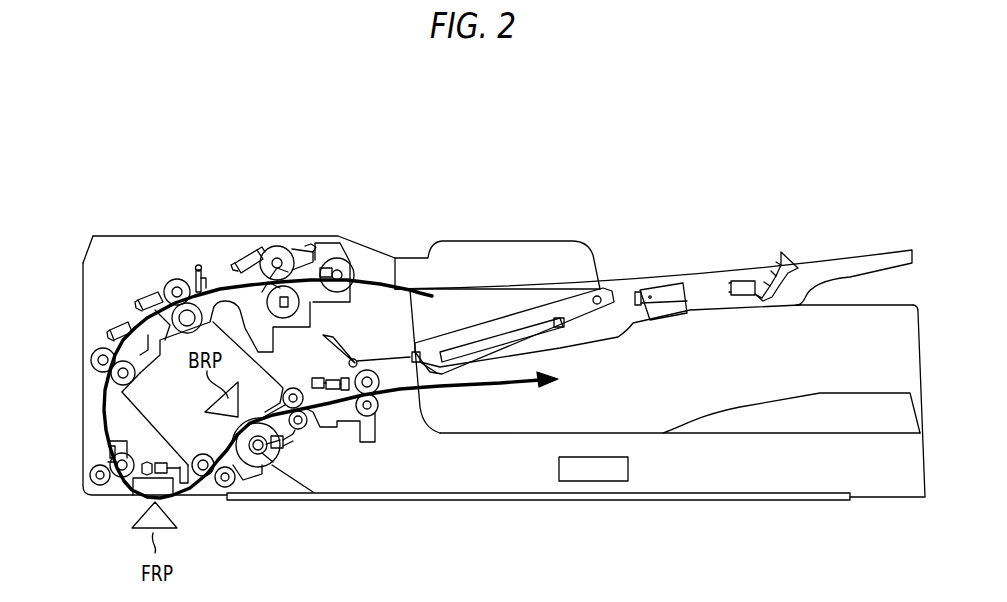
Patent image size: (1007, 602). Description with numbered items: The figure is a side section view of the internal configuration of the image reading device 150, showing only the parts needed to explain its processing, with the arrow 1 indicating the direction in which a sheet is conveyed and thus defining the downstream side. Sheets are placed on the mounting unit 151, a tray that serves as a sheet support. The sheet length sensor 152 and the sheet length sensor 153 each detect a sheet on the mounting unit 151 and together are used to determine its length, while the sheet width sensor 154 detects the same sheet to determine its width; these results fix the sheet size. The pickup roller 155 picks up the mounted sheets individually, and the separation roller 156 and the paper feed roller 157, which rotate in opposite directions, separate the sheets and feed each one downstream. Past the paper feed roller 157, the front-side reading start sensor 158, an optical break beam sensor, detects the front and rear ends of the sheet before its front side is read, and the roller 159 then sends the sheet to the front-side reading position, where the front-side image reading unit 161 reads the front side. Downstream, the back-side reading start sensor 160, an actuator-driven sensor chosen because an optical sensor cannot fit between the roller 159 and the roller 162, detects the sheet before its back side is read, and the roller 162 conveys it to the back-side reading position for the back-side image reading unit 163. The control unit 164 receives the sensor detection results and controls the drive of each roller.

The arrow 1 is at (503, 383).
The image reading device 150 is at (843, 114).
The mounting unit 151 is at (852, 265).
The sheet length sensor 152 is at (662, 289).
The sheet length sensor 153 is at (743, 280).
The sheet width sensor 154 is at (557, 320).
The pickup roller 155 is at (340, 256).
The separation roller 156 is at (262, 292).
The paper feed roller 157 is at (277, 249).
The front-side reading start sensor 158 is at (110, 441).
The roller 159 is at (117, 463).
The back-side reading start sensor 160 is at (152, 475).
The front-side image reading unit 161 is at (160, 487).
The roller 162 is at (208, 473).
The back-side image reading unit 163 is at (163, 418).
The control unit 164 is at (592, 472).